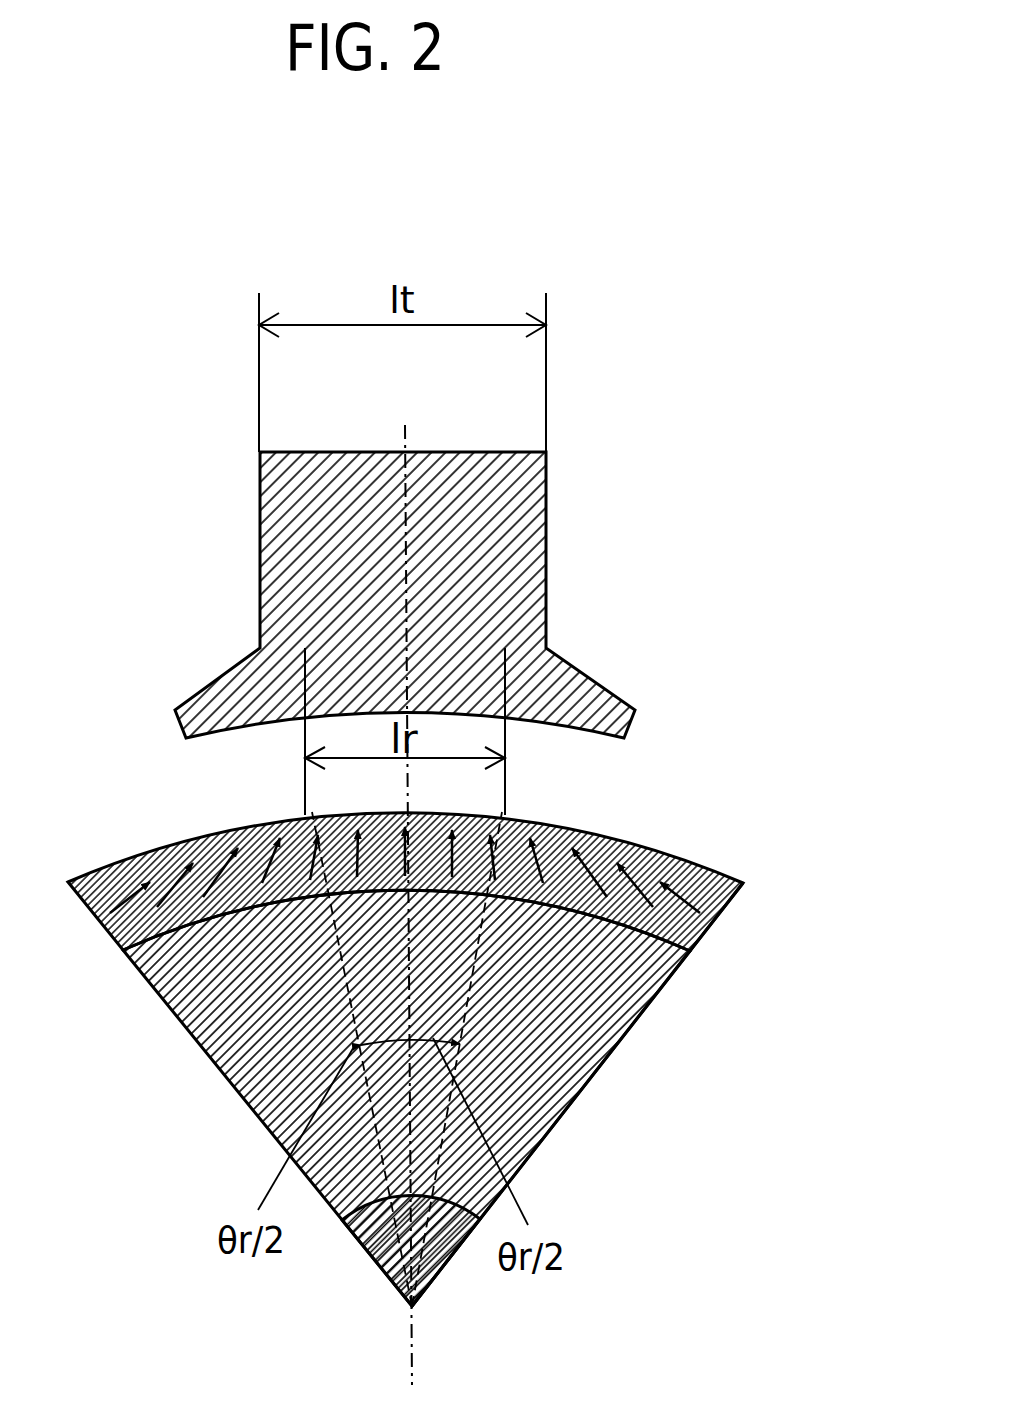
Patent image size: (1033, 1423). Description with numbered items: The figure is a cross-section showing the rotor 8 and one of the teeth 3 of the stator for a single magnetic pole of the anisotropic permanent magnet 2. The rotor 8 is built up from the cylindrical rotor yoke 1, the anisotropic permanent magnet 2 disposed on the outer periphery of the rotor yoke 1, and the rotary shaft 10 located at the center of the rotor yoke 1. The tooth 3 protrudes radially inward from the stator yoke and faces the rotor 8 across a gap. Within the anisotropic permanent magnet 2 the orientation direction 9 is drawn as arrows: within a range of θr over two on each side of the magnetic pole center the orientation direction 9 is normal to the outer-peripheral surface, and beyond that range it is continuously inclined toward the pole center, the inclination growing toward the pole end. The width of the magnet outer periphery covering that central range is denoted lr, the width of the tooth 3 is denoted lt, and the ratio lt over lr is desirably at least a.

The rotor yoke 1 is at (543, 1058).
The anisotropic permanent magnet 2 is at (730, 875).
The teeth 3 is at (511, 584).
The rotor 8 is at (682, 988).
The orientation direction 9 is at (590, 865).
The rotary shaft 10 is at (375, 1265).